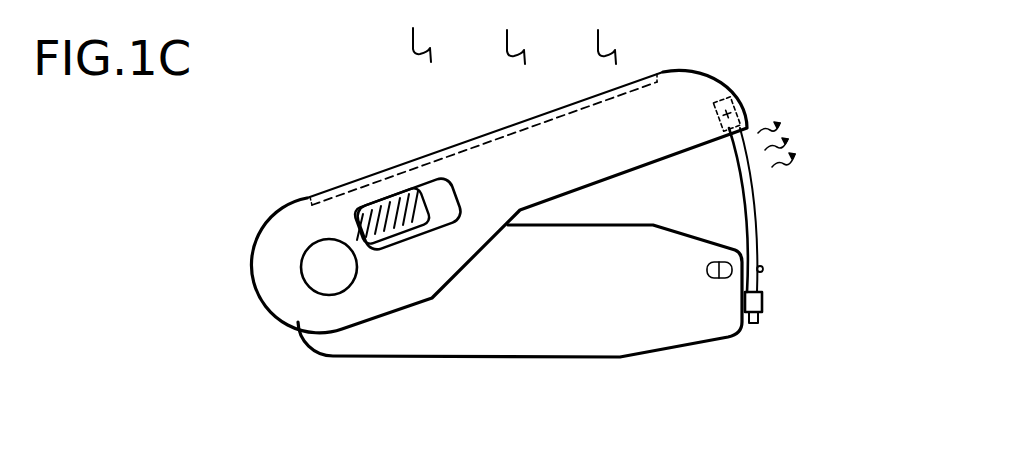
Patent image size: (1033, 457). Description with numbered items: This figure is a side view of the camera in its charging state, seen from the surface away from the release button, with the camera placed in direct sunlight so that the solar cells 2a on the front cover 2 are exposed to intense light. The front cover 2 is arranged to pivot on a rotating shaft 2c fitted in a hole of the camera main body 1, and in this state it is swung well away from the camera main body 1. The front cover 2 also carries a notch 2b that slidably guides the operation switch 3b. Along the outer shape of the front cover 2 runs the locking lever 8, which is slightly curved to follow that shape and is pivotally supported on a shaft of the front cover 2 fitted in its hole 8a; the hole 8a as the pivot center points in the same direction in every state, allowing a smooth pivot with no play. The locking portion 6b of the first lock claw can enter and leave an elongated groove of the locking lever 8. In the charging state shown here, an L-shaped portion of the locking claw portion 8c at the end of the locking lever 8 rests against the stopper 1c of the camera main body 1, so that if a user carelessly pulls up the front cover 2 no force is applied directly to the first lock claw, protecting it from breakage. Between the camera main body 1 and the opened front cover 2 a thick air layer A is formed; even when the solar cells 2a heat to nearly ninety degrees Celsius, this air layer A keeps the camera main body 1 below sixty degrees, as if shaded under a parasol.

The camera main body 1 is at (683, 342).
The stopper 1c is at (763, 301).
The front cover 2 is at (687, 88).
The solar cells 2a is at (539, 113).
The notch 2b is at (459, 180).
The rotating shaft 2c is at (331, 285).
The operation switch 3b is at (390, 207).
The locking portion 6b is at (763, 268).
The locking lever 8 is at (751, 197).
The hole 8a is at (745, 101).
The locking claw portion 8c is at (759, 320).
The air layer A is at (688, 217).